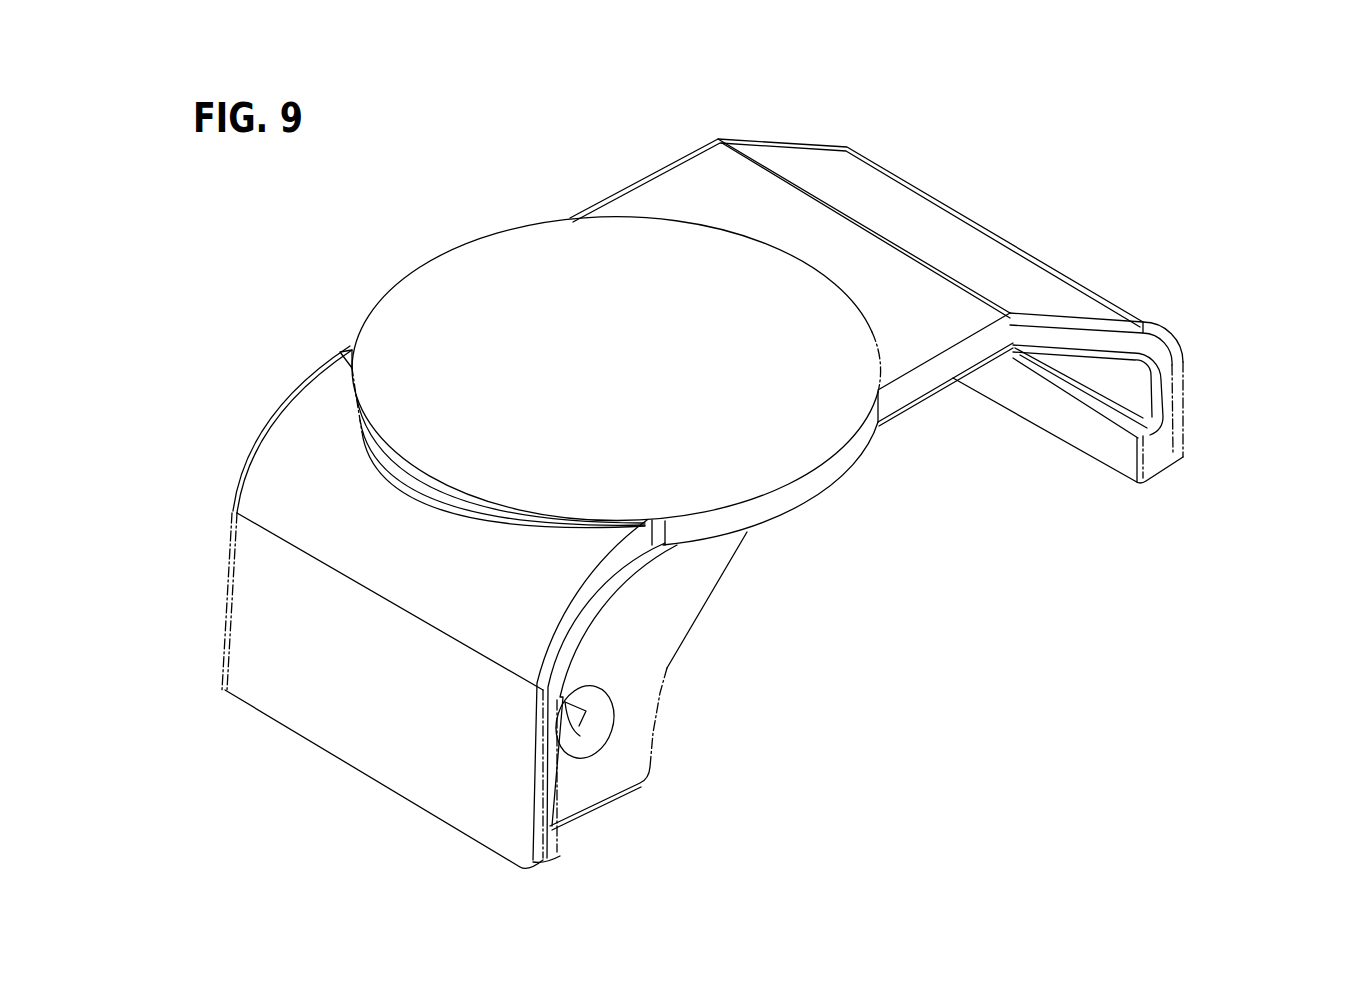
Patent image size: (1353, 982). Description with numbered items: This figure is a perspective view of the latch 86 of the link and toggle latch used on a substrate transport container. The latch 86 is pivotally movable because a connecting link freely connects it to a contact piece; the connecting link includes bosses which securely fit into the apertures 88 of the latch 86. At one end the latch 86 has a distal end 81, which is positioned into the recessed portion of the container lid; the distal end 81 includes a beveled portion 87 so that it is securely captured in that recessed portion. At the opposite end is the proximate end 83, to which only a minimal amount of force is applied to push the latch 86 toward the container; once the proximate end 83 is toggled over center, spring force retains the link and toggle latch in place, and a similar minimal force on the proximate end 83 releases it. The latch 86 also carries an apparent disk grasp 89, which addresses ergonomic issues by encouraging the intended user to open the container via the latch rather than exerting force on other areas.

The distal end 81 is at (1203, 403).
The proximate end 83 is at (233, 405).
The latch 86 is at (925, 157).
The beveled portion 87 is at (1078, 430).
The apertures 88 is at (597, 728).
The disk grasp 89 is at (783, 458).